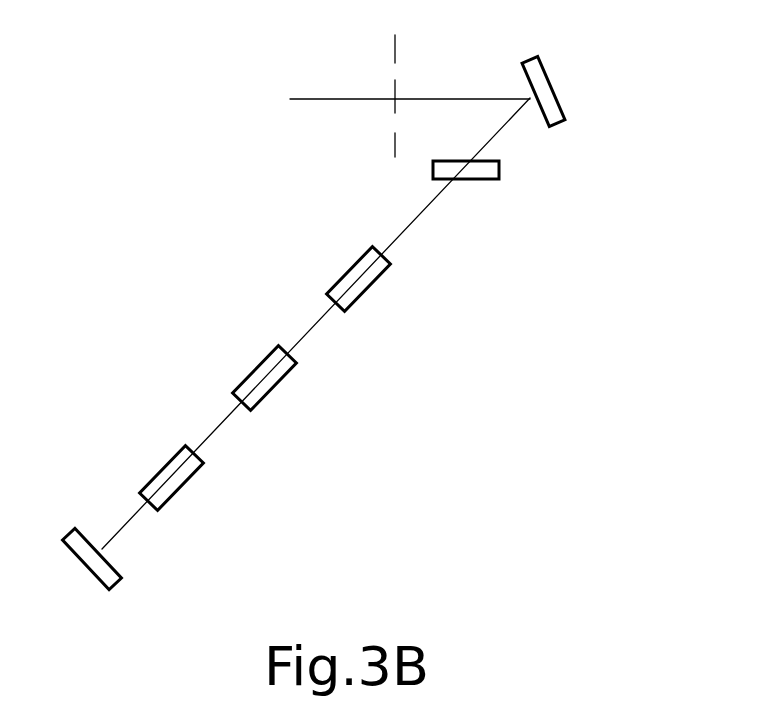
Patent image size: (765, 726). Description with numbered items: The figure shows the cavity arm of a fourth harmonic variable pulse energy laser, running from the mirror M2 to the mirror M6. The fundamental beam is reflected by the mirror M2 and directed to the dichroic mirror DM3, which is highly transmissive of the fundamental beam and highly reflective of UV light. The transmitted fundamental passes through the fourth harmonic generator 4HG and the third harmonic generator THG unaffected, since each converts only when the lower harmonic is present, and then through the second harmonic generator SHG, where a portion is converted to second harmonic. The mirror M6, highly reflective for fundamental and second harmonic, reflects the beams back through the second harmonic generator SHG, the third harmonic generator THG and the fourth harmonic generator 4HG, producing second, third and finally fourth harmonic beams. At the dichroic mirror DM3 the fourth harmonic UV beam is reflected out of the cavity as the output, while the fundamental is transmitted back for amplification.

The mirror M2 is at (571, 88).
The dichroic mirror DM3 is at (496, 196).
The fourth harmonic generator 4HG is at (390, 290).
The third harmonic generator THG is at (298, 389).
The second harmonic generator SHG is at (201, 491).
The mirror M6 is at (77, 571).